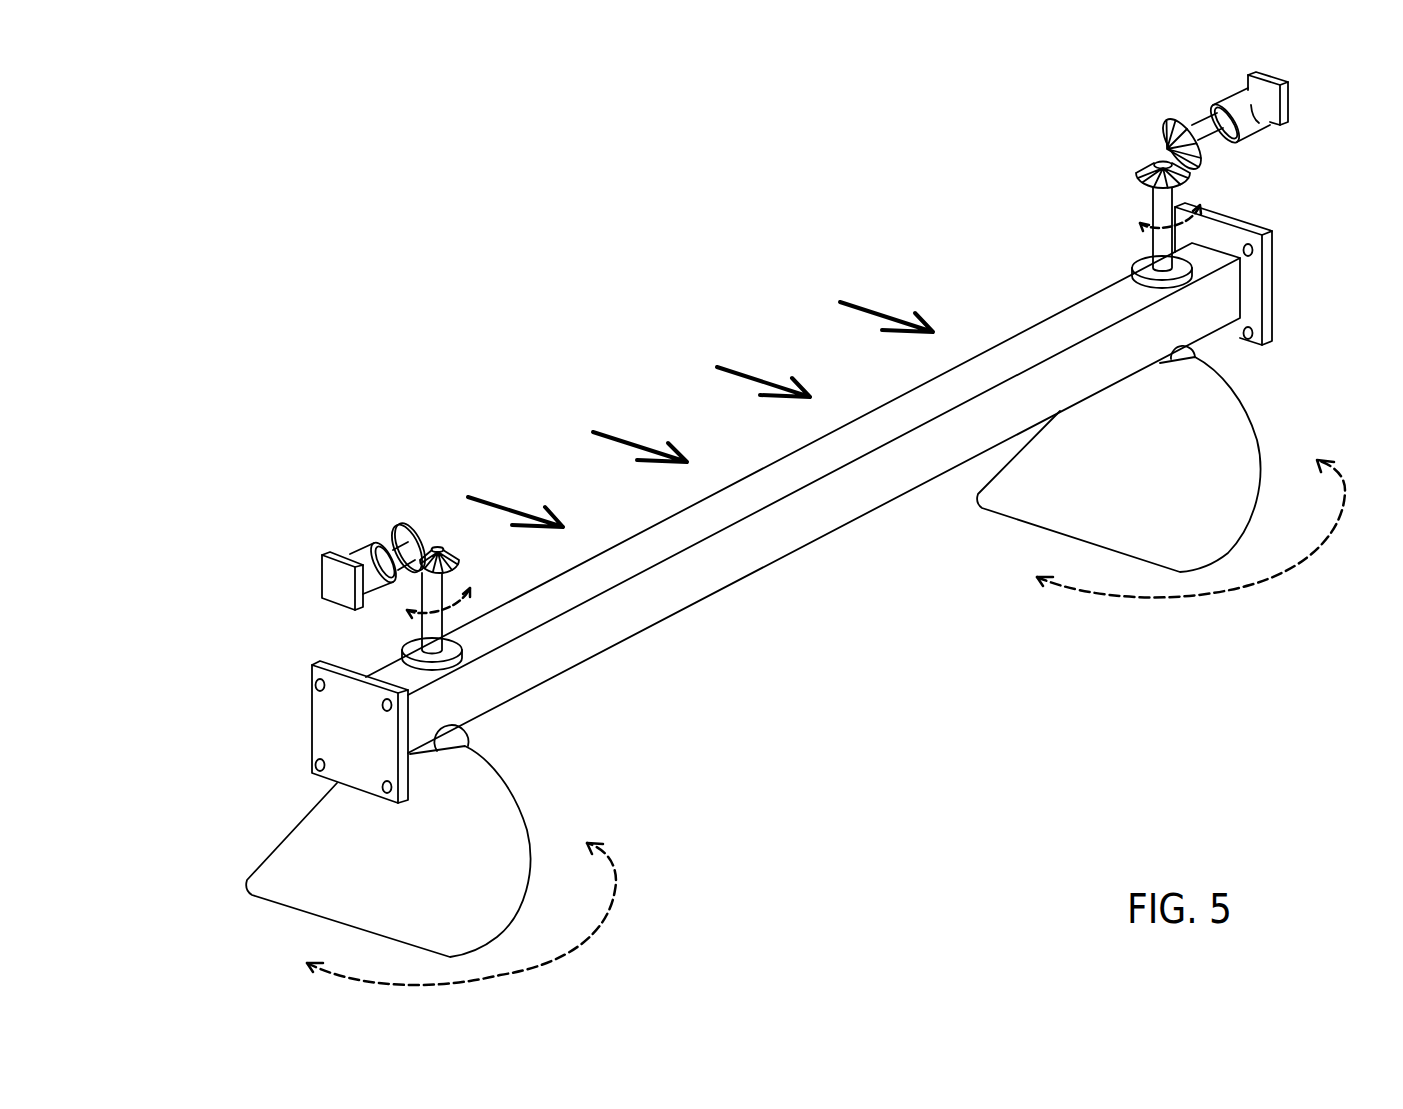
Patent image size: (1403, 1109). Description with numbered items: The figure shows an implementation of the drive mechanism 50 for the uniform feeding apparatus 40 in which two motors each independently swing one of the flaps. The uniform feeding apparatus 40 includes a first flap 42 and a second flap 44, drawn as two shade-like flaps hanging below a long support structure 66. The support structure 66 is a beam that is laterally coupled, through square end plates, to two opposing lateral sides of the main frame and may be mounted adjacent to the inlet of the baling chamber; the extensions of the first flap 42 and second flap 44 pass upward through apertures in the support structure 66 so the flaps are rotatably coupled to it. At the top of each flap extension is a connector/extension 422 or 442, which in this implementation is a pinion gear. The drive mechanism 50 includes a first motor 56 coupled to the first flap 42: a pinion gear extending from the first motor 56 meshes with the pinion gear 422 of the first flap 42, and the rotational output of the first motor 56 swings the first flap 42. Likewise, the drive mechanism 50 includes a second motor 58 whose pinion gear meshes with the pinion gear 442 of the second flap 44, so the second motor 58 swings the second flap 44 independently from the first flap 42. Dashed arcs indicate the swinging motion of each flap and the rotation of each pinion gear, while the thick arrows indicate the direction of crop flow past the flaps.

The uniform feeding apparatus 40 is at (637, 244).
The first flap 42 is at (565, 819).
The second flap 44 is at (971, 528).
The drive mechanism 50 is at (216, 564).
The first motor 56 is at (363, 553).
The second motor 58 is at (1252, 110).
The support structure 66 is at (826, 525).
The connector/extension 422 is at (468, 627).
The connector/extension 442 is at (1133, 192).